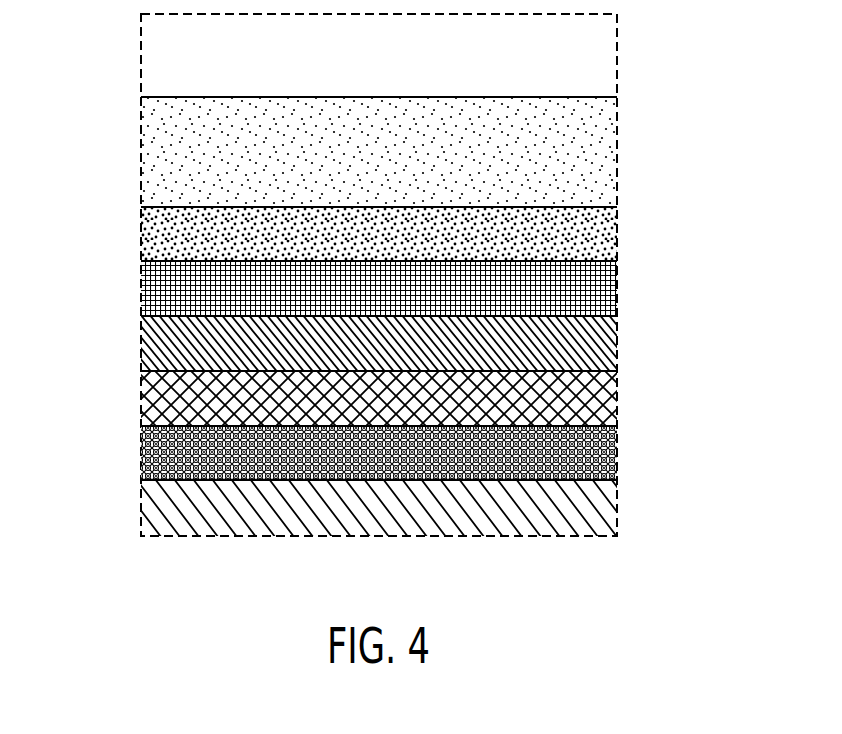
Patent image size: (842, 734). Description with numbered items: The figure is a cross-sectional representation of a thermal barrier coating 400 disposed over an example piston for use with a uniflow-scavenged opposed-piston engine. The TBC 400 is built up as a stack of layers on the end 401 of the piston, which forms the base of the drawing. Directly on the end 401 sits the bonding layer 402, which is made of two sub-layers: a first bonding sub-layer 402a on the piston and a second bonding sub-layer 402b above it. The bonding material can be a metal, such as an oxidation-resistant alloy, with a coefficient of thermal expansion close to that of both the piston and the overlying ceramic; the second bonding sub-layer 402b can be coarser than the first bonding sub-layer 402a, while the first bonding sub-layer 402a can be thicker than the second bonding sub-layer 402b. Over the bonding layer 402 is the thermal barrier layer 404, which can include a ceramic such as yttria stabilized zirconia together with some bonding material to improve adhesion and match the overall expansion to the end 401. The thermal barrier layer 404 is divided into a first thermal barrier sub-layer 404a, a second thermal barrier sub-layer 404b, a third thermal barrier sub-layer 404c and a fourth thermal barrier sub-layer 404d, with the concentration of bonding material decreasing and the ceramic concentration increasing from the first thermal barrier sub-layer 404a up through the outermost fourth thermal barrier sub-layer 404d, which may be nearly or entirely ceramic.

The thermal barrier coating 400 is at (411, 288).
The end of piston 401 is at (631, 482).
The bonding layer 402 is at (366, 425).
The first bonding sub-layer 402a is at (140, 452).
The second bonding sub-layer 402b is at (140, 402).
The thermal barrier layer 404 is at (365, 233).
The first thermal barrier sub-layer 404a is at (140, 347).
The second thermal barrier sub-layer 404b is at (140, 289).
The third thermal barrier sub-layer 404c is at (140, 238).
The fourth thermal barrier sub-layer 404d is at (140, 168).